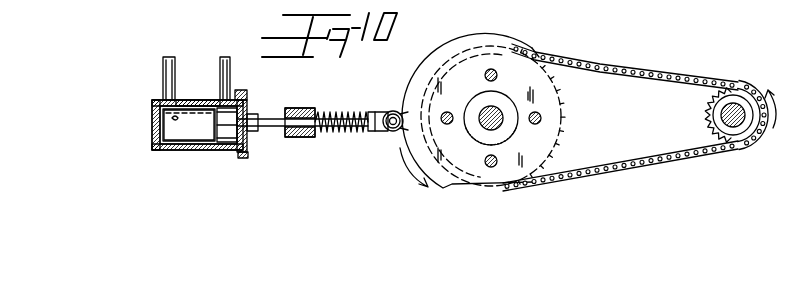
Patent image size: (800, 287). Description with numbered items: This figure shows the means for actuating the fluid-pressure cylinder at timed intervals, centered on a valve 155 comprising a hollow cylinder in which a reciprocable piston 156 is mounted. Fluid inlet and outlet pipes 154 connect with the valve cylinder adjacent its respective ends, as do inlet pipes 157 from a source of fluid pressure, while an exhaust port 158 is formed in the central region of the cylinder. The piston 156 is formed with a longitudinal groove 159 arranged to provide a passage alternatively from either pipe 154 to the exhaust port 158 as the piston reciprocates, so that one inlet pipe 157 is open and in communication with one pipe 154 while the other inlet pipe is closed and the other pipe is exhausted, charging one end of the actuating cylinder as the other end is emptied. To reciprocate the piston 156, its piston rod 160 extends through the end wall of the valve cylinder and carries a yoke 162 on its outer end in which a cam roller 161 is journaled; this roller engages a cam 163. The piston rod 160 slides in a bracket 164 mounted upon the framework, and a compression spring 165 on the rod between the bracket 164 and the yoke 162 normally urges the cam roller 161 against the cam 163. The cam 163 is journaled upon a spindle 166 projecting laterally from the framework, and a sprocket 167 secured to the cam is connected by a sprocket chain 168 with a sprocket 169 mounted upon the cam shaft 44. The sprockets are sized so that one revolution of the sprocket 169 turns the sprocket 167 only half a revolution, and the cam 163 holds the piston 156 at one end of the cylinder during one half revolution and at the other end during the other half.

The cam shaft 44 is at (735, 110).
The fluid inlet and outlet pipes 154 is at (163, 82).
The valve 155 is at (220, 143).
The piston 156 is at (183, 150).
The inlet pipes 157 is at (247, 106).
The exhaust port 158 is at (198, 100).
The longitudinal groove 159 is at (162, 123).
The piston rod 160 is at (277, 127).
The cam roller 161 is at (400, 110).
The yoke 162 is at (378, 132).
The cam 163 is at (480, 168).
The bracket 164 is at (305, 110).
The compression spring 165 is at (338, 132).
The spindle 166 is at (487, 112).
The sprocket 167 is at (550, 158).
The sprocket chain 168 is at (648, 76).
The sprocket 169 is at (707, 103).